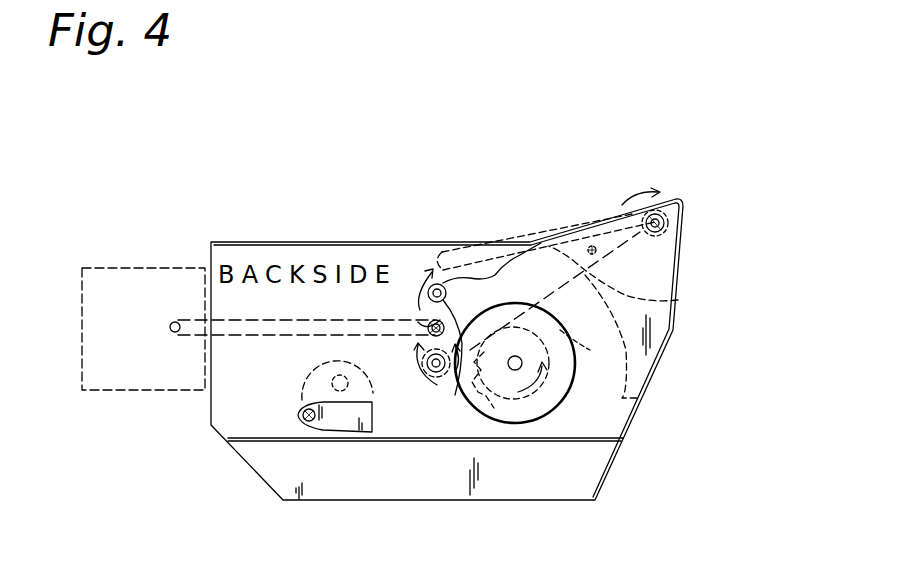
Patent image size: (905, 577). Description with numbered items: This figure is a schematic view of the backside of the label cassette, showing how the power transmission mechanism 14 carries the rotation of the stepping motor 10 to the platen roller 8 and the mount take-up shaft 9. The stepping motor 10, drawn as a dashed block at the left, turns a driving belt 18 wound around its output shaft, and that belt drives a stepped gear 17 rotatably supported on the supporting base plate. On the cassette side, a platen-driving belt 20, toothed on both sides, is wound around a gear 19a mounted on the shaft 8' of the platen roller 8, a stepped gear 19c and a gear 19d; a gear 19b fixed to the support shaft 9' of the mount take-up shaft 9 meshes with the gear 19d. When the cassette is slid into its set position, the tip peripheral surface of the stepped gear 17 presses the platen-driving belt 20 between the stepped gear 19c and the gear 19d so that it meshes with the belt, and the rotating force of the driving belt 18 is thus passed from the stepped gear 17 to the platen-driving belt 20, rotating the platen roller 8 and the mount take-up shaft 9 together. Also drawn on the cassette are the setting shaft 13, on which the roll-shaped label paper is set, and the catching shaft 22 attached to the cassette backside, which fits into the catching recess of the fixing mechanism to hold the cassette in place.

The platen roller 8 is at (683, 213).
The shaft of the platen roller 8' is at (707, 237).
The mount take-up shaft 9 is at (515, 434).
The support shaft of the mount take-up shaft 9' is at (555, 296).
The stepping motor 10 is at (138, 385).
The setting shaft 13 is at (373, 393).
The power transmission mechanism 14 is at (412, 312).
The stepped gear 17 is at (443, 325).
The driving belt 18 is at (262, 337).
The gear 19a is at (653, 236).
The gear 19b is at (548, 392).
The stepped gear 19c is at (445, 376).
The gear 19d is at (494, 279).
The platen-driving belt 20 is at (678, 300).
The catching shaft 22 is at (302, 400).